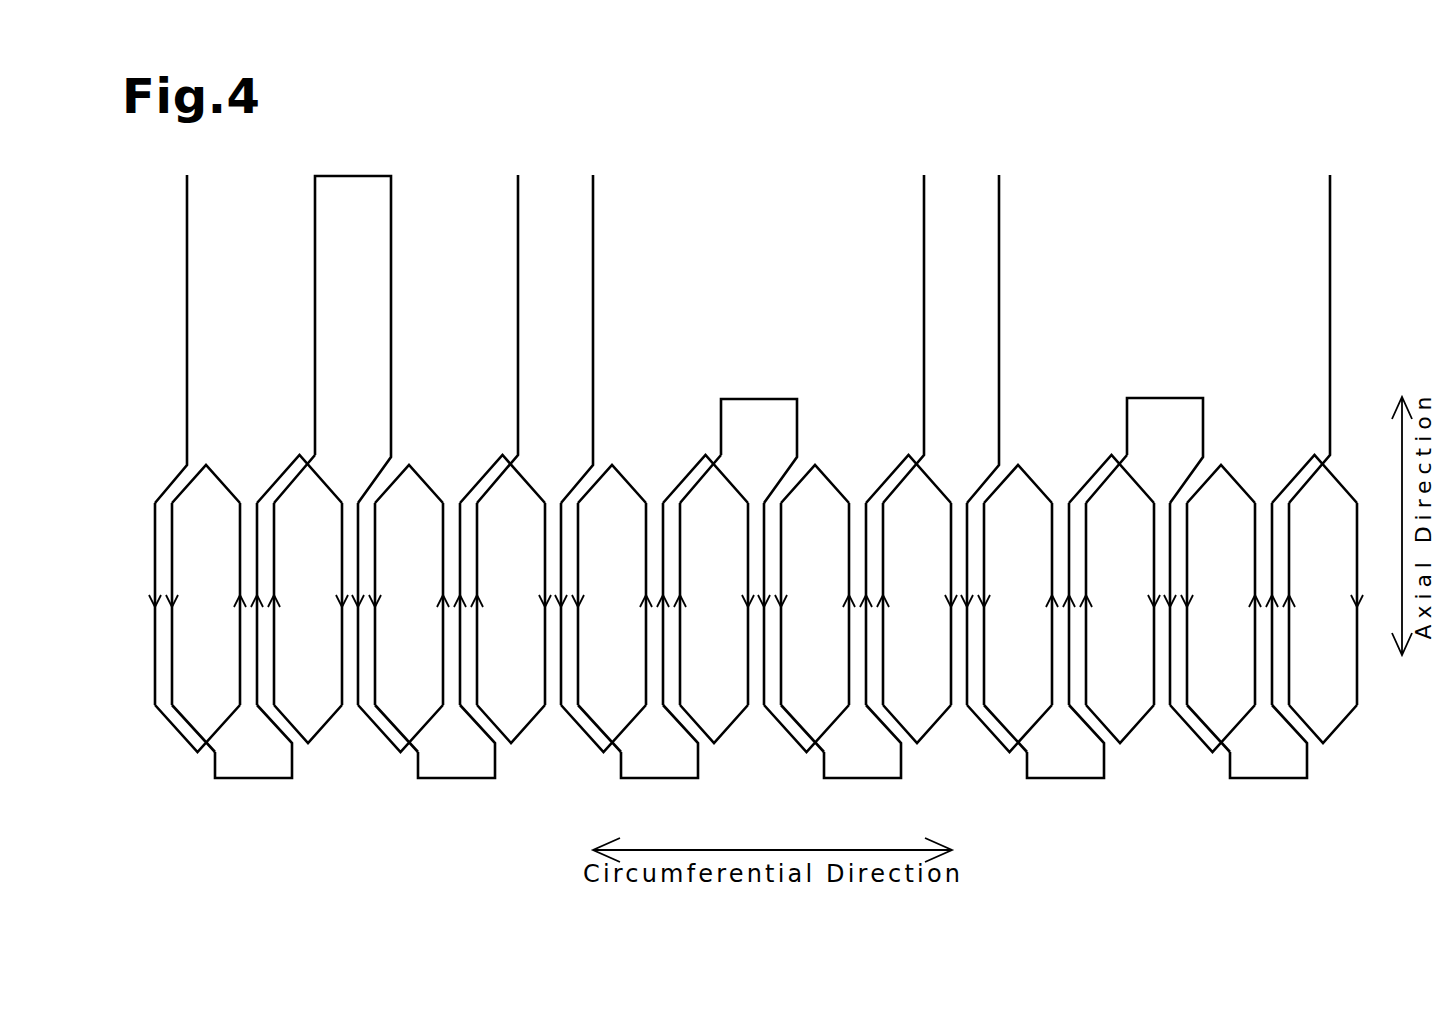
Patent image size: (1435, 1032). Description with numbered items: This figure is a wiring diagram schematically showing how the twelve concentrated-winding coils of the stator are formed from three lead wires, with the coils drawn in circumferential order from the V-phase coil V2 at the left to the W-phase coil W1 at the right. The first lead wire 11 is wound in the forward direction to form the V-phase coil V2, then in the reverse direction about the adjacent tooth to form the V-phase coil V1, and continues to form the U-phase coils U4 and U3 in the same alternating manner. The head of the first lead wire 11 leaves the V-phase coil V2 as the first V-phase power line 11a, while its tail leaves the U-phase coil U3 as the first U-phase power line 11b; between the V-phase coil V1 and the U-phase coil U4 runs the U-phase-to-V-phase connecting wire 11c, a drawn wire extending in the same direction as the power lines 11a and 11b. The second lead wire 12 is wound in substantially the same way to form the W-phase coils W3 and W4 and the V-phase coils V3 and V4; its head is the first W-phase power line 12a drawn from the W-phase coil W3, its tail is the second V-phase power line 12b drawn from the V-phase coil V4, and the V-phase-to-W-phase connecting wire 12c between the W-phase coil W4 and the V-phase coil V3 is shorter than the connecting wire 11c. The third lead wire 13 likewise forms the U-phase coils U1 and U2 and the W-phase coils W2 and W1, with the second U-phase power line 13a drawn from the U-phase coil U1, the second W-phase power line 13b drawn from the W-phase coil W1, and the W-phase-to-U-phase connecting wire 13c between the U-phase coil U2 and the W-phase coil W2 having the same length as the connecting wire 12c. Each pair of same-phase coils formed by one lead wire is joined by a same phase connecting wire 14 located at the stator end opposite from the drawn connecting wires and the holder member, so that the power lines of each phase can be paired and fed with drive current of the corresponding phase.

The first lead wire 11 is at (187, 320).
The first V-phase power line 11a is at (187, 200).
The first U-phase power line 11b is at (518, 200).
The U-phase-to-V-phase connecting wire 11c is at (353, 176).
The second lead wire 12 is at (593, 320).
The first W-phase power line 12a is at (593, 200).
The second V-phase power line 12b is at (924, 200).
The V-phase-to-W-phase connecting wire 12c is at (760, 399).
The third lead wire 13 is at (999, 320).
The second U-phase power line 13a is at (999, 200).
The second W-phase power line 13b is at (1330, 200).
The W-phase-to-U-phase connecting wire 13c is at (1165, 398).
The same phase connecting wire 14 is at (1269, 798).
The V-phase coil V1 is at (268, 720).
The V-phase coil V2 is at (177, 738).
The V-phase coil V3 is at (786, 738).
The V-phase coil V4 is at (877, 720).
The U-phase coil U1 is at (989, 738).
The U-phase coil U2 is at (1080, 720).
The U-phase coil U3 is at (471, 720).
The U-phase coil U4 is at (380, 738).
The W-phase coil W1 is at (1283, 720).
The W-phase coil W2 is at (1192, 738).
The W-phase coil W3 is at (583, 738).
The W-phase coil W4 is at (674, 720).